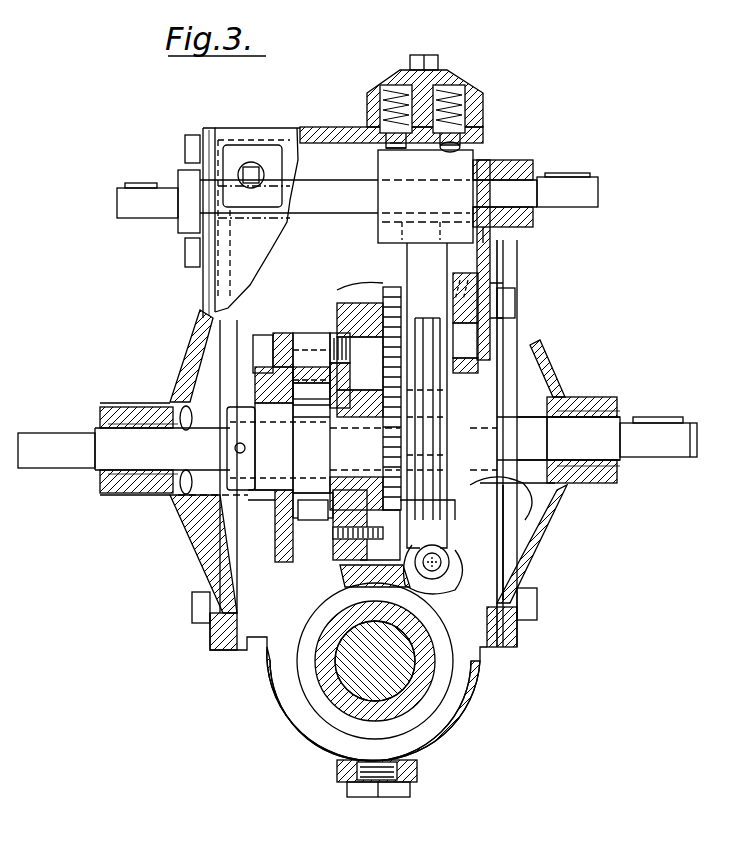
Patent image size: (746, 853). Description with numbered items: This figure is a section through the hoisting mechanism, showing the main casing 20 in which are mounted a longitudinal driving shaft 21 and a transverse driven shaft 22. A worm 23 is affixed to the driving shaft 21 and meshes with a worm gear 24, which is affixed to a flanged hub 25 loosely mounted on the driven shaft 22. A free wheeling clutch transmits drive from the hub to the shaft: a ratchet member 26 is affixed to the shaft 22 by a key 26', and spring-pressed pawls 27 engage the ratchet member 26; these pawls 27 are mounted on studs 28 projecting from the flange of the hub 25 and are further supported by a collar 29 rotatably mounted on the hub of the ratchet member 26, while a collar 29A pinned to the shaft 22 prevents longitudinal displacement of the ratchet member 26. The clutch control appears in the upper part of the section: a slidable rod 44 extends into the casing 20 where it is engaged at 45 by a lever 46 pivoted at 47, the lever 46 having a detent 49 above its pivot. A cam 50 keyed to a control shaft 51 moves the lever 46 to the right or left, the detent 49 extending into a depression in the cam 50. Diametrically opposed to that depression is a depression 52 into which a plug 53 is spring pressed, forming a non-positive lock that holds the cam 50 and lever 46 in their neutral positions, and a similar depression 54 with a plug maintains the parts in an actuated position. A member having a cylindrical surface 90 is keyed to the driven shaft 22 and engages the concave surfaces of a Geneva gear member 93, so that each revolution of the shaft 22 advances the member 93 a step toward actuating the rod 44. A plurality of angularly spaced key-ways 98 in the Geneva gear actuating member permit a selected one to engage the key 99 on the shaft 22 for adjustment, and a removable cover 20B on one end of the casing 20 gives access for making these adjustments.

The main casing 20 is at (268, 128).
The cover 20B is at (520, 345).
The longitudinal driving shaft 21 is at (400, 690).
The transverse driven shaft 22 is at (105, 453).
The worm 23 is at (320, 715).
The worm gear 24 is at (340, 575).
The flanged hub 25 is at (340, 510).
The ratchet member 26 is at (266, 526).
The key 26' is at (256, 429).
The pawls 27 is at (305, 345).
The studs 28 is at (333, 345).
The collar 29 is at (276, 333).
The collar 29A is at (235, 480).
The slidable rod 44 is at (452, 560).
The engagement point 45 is at (437, 580).
The lever 46 is at (440, 520).
The pivot 47 is at (455, 300).
The detent 49 is at (398, 243).
The cam 50 is at (378, 225).
The control shaft 51 is at (585, 190).
The depression 52 is at (395, 152).
The plug 53 is at (385, 147).
The depression 54 is at (458, 150).
The cylindrical surface 90 is at (515, 388).
The Geneva gear member 93 is at (505, 510).
The key-ways 98 is at (530, 505).
The key 99 is at (530, 400).